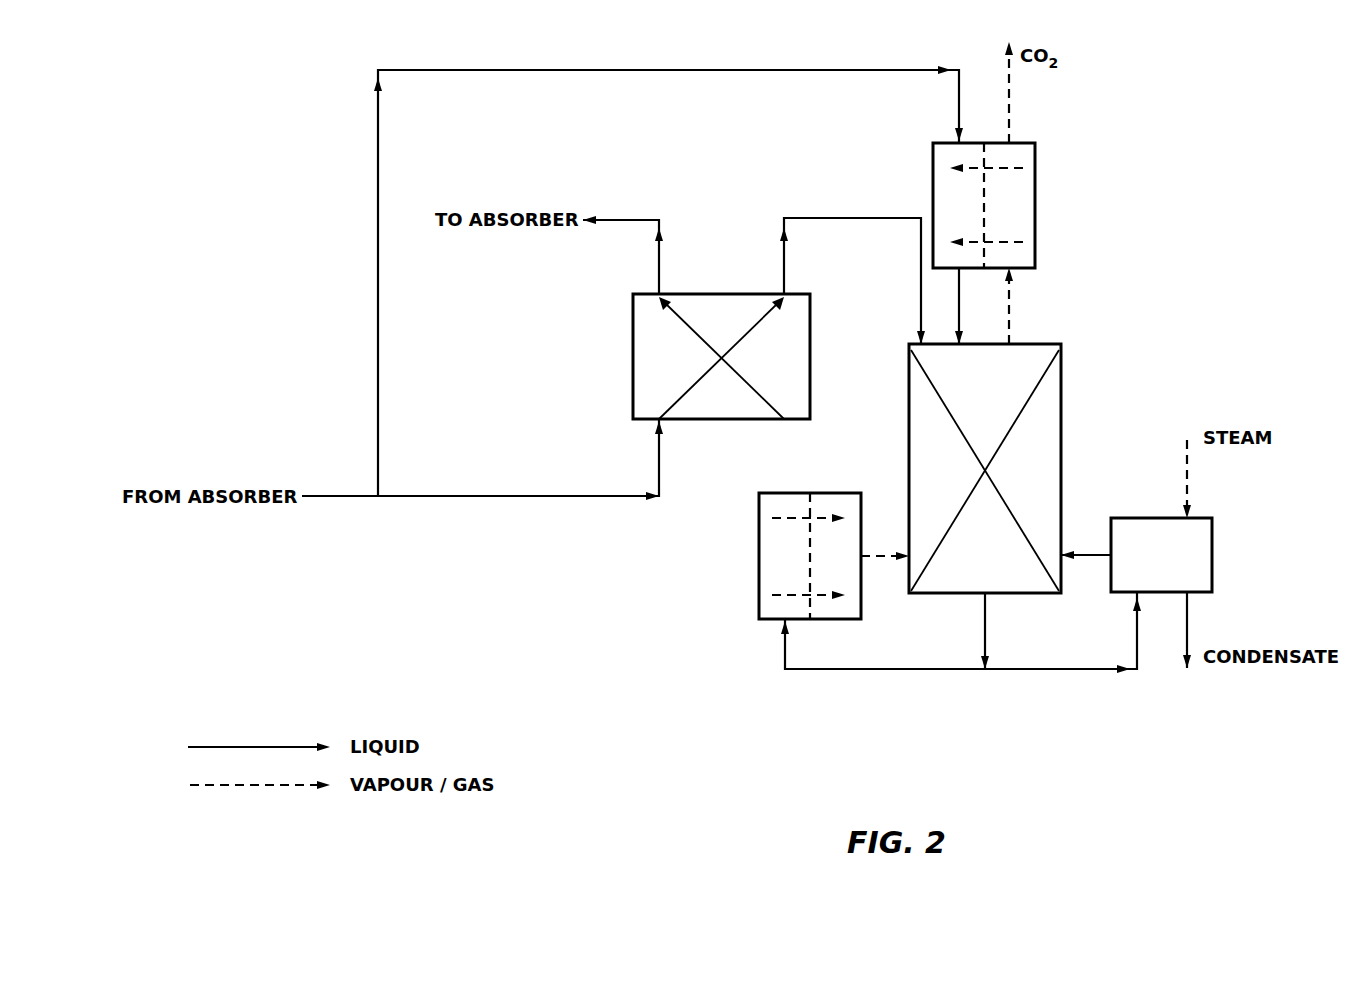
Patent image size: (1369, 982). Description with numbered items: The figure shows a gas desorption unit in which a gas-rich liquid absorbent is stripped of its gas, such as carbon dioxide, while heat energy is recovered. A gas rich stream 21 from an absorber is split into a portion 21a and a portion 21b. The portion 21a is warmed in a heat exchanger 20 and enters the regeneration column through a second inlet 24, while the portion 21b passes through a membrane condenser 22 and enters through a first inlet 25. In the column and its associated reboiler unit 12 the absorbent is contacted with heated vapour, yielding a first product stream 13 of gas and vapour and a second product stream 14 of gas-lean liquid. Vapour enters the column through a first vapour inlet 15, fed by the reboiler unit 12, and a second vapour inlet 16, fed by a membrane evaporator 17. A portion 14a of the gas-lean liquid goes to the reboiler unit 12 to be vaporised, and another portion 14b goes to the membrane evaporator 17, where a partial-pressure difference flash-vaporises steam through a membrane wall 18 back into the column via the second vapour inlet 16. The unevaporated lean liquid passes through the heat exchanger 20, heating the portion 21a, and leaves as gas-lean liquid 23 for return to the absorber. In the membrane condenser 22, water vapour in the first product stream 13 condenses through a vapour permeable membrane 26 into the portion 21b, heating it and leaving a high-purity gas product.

The reboiler unit 12 is at (1212, 553).
The first product stream 13 is at (1012, 297).
The second product stream 14 is at (985, 624).
The portion of the gas-lean liquid 14a is at (1062, 669).
The portion of the gas-lean liquid 14b is at (873, 669).
The first vapour inlet 15 is at (1095, 556).
The second vapour inlet 16 is at (880, 558).
The membrane evaporator 17 is at (759, 555).
The membrane wall 18 is at (808, 500).
The heat exchanger 20 is at (633, 358).
The gas rich stream 21 is at (335, 496).
The portion of gas rich stream 21a is at (592, 496).
The portion of the stream from the absorber 21b is at (378, 280).
The membrane condenser 22 is at (1035, 202).
The gas-lean liquid 23 is at (659, 253).
The second inlet 24 is at (922, 273).
The first inlet 25 is at (959, 300).
The vapour permeable membrane 26 is at (984, 158).